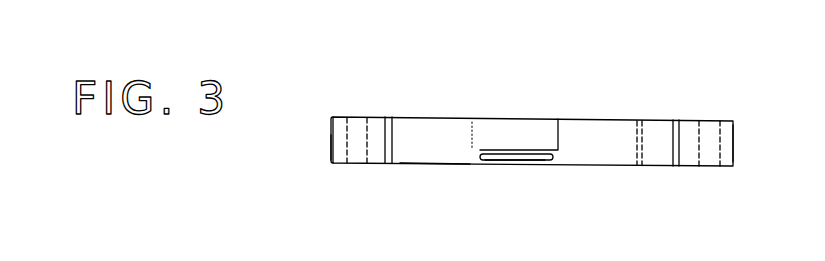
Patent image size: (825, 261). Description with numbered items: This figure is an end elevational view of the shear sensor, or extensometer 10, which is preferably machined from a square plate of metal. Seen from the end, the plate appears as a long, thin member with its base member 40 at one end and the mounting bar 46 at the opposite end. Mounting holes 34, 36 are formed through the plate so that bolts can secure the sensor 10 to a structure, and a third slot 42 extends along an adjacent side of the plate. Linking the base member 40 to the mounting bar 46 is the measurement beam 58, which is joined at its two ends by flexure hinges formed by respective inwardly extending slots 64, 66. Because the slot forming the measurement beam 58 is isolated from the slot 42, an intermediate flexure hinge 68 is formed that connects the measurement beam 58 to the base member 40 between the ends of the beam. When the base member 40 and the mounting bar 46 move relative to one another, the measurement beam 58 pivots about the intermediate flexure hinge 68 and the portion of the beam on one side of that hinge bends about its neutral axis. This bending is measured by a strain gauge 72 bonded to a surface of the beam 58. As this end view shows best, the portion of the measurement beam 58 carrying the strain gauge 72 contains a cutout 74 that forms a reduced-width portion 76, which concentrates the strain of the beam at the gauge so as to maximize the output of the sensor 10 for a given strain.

The extensometer 10 is at (343, 91).
The mounting hole 34 is at (712, 119).
The mounting hole 36 is at (361, 117).
The base member 40 is at (332, 150).
The third slot 42 is at (655, 119).
The mounting bar 46 is at (733, 152).
The measurement beam 58 is at (440, 165).
The inwardly extending slot 64 is at (388, 164).
The inwardly extending slot 66 is at (676, 167).
The intermediate flexure hinge 68 is at (640, 119).
The strain gauge 72 is at (541, 161).
The cutout 74 is at (528, 133).
The reduced-width portion 76 is at (511, 165).